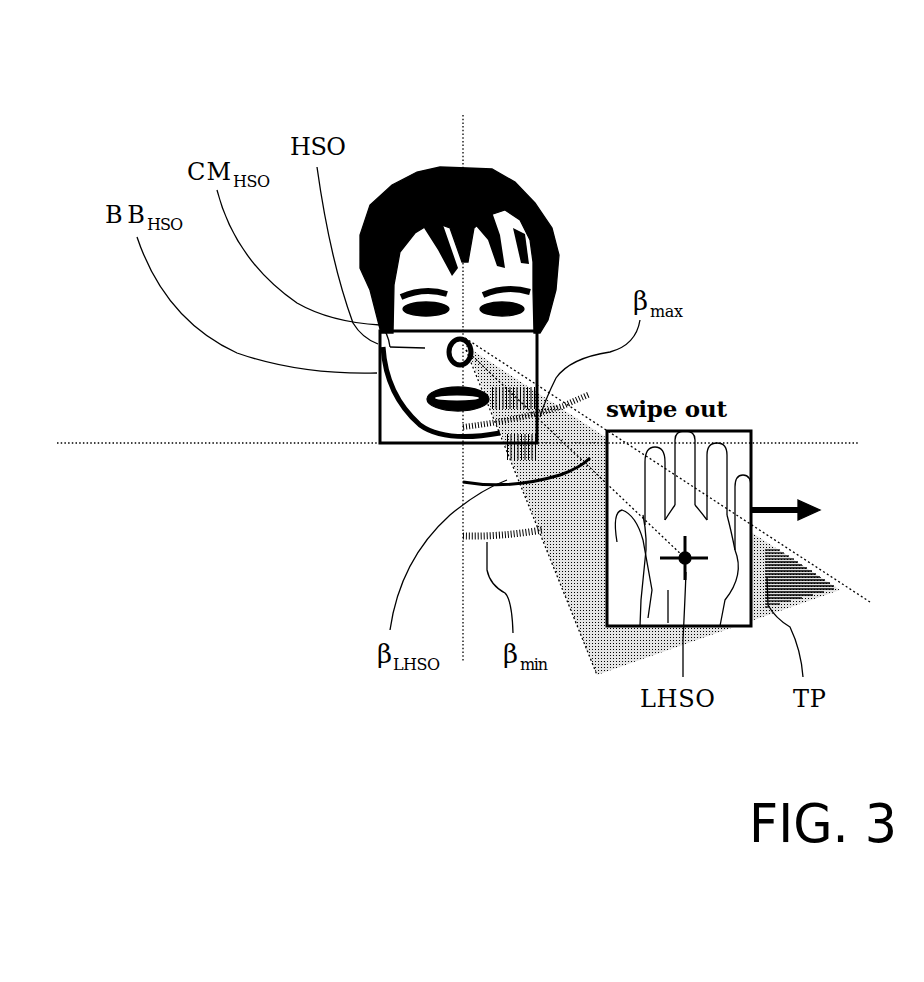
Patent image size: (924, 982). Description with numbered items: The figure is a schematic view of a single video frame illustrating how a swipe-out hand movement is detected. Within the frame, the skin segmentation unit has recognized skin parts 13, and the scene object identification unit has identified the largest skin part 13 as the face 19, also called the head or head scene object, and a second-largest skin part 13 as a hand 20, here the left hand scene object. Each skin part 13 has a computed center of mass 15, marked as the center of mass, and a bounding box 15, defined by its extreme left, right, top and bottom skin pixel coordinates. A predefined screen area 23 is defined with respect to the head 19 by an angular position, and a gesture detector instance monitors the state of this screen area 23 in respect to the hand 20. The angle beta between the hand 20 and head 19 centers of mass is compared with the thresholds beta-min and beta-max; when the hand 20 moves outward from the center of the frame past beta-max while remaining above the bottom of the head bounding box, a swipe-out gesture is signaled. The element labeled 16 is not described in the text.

The face 19 is at (375, 212).
The skin part 13 is at (400, 188).
The center of mass 15 is at (493, 178).
The hand shaped object region 16 is at (523, 190).
The predefined screen area 23 is at (583, 558).
The hand 20 is at (663, 627).